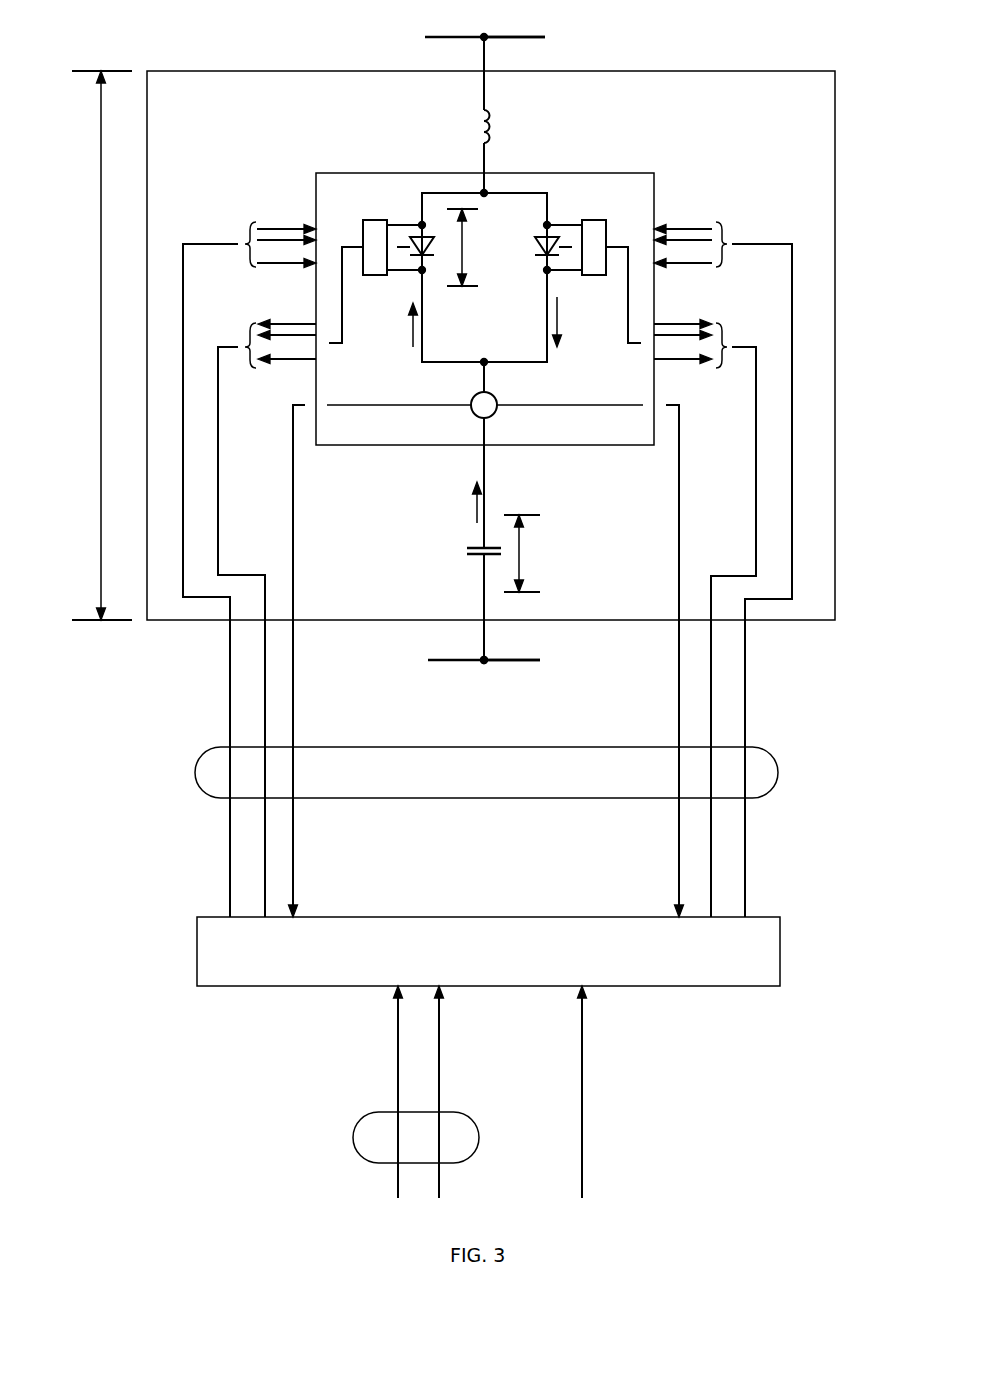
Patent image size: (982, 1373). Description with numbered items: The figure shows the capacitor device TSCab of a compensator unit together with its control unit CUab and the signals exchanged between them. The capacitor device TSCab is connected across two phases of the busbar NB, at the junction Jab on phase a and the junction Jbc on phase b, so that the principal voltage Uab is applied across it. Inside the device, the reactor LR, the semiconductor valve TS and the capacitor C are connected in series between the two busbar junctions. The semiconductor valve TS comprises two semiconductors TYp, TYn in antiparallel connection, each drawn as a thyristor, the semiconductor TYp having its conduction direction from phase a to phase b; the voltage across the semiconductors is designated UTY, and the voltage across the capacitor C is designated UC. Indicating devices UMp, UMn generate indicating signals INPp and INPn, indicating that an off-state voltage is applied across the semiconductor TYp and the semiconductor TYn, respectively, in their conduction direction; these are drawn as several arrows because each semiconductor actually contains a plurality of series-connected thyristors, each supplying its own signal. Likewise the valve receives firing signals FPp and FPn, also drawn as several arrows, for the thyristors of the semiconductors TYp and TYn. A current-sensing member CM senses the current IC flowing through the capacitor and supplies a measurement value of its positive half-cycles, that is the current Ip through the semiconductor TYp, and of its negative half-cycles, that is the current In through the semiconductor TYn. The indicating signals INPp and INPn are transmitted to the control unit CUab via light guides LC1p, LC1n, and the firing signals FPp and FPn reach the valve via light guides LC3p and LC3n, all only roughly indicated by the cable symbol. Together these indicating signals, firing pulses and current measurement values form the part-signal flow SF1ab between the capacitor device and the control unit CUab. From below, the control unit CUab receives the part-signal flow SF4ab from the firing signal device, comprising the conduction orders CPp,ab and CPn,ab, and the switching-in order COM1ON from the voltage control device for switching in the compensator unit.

The capacitor device TSCab is at (640, 71).
The busbar NB is at (448, 37).
The junction Jbc is at (486, 35).
The phase b is at (519, 46).
The reactor LR is at (488, 118).
The semiconductor valve TS is at (427, 173).
The indicating device UMp is at (362, 232).
The semiconductor TYp is at (418, 237).
The semiconductor TYn is at (551, 237).
The indicating device UMn is at (607, 232).
The voltage across the semiconductors UTY is at (475, 247).
The current through semiconductor TYp Ip is at (345, 610).
The current through semiconductor TYn In is at (618, 607).
The current-sensing member CM is at (497, 412).
The principal voltage Uab is at (90, 345).
The capacitor current IC is at (464, 504).
The capacitor C is at (475, 556).
The voltage across the capacitor UC is at (530, 553).
The phase a is at (521, 660).
The junction Jab is at (486, 664).
The light guide LC1p is at (263, 787).
The light guide LC3p is at (230, 786).
The light guide LC1n is at (712, 790).
The light guide LC3n is at (745, 789).
The part-signal flow SF1ab is at (447, 799).
The firing signal FPp is at (218, 883).
The indicating signal INPp is at (252, 881).
The indicating signal INPn is at (698, 882).
The firing signal FPn is at (732, 883).
The control unit CUab is at (284, 980).
The conduction order CPp,ab is at (387, 1092).
The conduction order CPn,ab is at (428, 1092).
The switching-in order COM1ON is at (571, 1092).
The part-signal flow SF4ab is at (353, 1137).